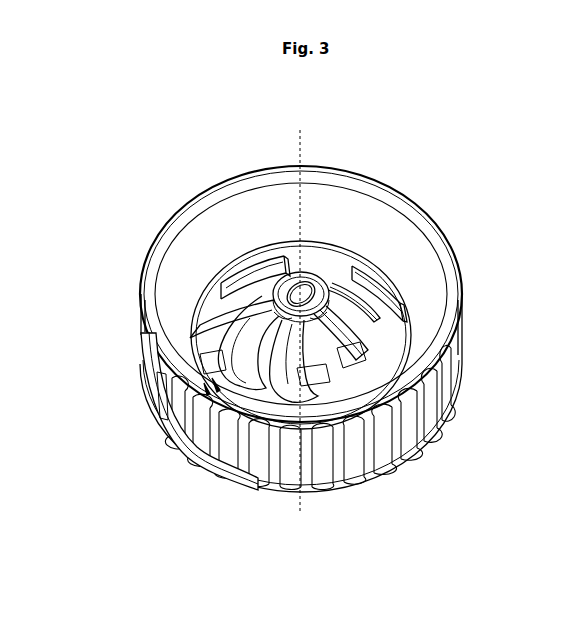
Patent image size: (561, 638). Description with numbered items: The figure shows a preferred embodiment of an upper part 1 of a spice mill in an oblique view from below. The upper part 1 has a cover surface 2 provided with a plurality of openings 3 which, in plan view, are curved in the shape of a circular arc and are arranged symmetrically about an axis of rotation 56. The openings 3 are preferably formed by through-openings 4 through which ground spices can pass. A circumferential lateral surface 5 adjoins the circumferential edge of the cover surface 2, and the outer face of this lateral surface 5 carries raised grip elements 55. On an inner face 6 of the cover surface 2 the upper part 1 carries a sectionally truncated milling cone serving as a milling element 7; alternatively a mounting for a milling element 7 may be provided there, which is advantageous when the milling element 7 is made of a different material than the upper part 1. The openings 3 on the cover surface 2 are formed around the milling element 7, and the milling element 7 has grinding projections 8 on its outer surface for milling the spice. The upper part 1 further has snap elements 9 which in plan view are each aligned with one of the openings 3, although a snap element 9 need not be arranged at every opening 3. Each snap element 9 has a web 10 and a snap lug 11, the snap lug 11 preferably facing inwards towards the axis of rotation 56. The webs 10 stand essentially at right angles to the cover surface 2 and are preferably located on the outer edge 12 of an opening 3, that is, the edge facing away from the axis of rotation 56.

The upper part 1 is at (294, 322).
The cover surface 2 is at (343, 272).
The openings 3 is at (380, 327).
The through-openings 4 is at (367, 313).
The circumferential lateral surface 5 is at (416, 436).
The inner face 6 is at (308, 268).
The milling element 7 is at (272, 294).
The grinding projections 8 is at (340, 390).
The snap elements 9 is at (237, 262).
The web 10 is at (227, 297).
The snap lug 11 is at (393, 300).
The outer edge 12 is at (400, 318).
The raised grip elements 55 is at (430, 408).
The axis of rotation 56 is at (300, 163).